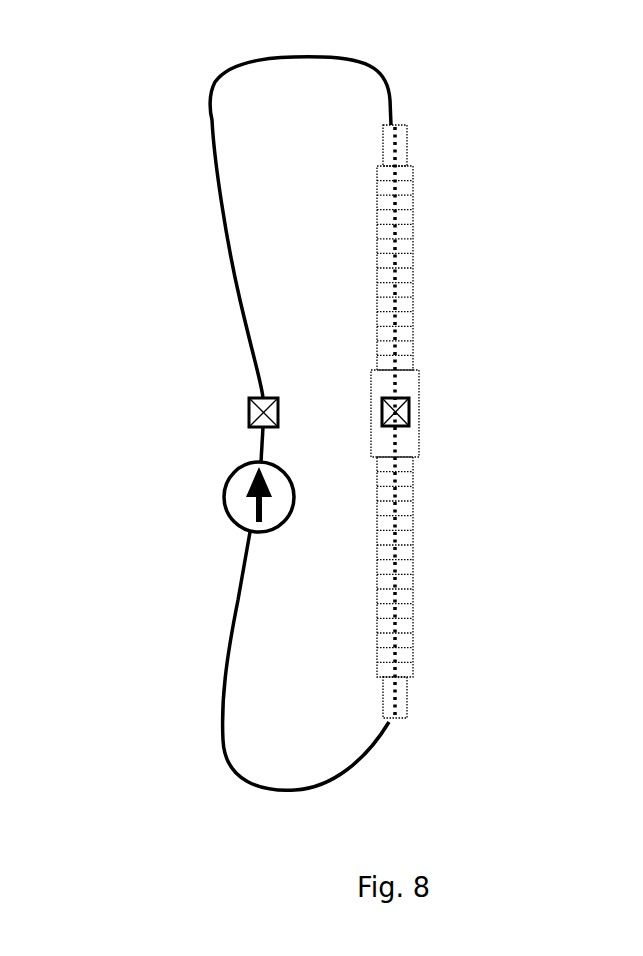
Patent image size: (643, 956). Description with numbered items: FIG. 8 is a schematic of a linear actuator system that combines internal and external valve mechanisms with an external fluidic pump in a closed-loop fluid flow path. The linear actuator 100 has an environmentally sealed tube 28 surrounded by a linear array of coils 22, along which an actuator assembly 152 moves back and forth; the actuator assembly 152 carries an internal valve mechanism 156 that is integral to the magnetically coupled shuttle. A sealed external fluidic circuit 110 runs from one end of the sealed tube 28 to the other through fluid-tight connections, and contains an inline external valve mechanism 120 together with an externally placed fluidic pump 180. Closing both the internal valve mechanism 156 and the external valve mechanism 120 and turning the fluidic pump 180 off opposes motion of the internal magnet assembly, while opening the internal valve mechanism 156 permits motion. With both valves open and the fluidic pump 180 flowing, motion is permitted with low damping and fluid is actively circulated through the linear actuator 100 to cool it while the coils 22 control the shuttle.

The linear actuator 100 is at (468, 417).
The external fluidic circuit 110 is at (388, 77).
The external valve mechanism 120 is at (262, 398).
The fluidic pump 180 is at (224, 500).
The sealed tube 28 is at (407, 145).
The linear array of coils 22 is at (398, 212).
The actuator assembly 152 is at (420, 370).
The internal valve mechanism 156 is at (407, 415).